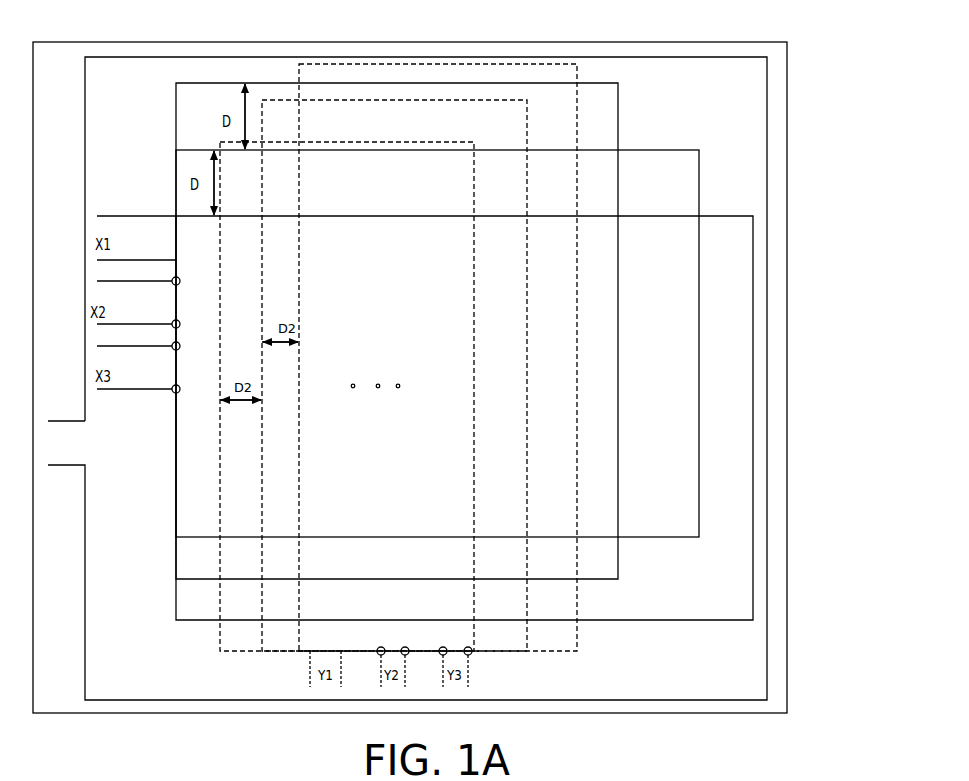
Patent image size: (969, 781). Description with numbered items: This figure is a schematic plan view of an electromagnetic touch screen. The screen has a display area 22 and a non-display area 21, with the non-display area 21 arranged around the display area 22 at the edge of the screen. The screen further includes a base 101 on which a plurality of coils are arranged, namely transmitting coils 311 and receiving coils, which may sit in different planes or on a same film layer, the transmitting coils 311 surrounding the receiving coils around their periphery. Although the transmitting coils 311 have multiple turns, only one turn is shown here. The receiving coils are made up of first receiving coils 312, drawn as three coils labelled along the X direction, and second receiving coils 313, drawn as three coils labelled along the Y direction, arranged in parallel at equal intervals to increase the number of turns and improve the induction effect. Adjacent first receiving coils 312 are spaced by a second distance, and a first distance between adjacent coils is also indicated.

The base 101 is at (787, 548).
The transmitting coils 311 is at (271, 56).
The first receiving coils 312 is at (578, 66).
The second receiving coils 313 is at (755, 470).
The display area 22 is at (640, 334).
The non-display area 21 is at (737, 678).